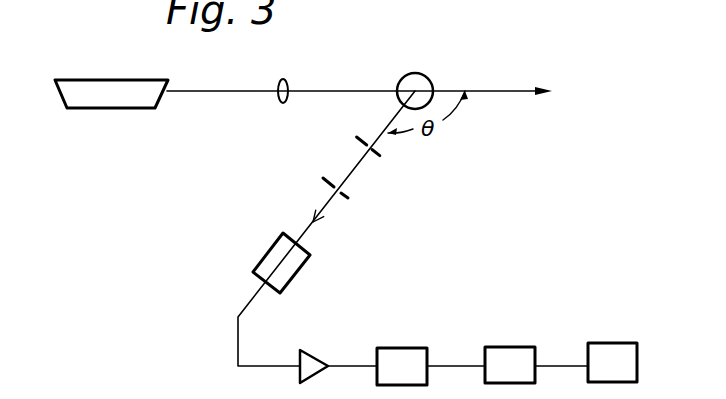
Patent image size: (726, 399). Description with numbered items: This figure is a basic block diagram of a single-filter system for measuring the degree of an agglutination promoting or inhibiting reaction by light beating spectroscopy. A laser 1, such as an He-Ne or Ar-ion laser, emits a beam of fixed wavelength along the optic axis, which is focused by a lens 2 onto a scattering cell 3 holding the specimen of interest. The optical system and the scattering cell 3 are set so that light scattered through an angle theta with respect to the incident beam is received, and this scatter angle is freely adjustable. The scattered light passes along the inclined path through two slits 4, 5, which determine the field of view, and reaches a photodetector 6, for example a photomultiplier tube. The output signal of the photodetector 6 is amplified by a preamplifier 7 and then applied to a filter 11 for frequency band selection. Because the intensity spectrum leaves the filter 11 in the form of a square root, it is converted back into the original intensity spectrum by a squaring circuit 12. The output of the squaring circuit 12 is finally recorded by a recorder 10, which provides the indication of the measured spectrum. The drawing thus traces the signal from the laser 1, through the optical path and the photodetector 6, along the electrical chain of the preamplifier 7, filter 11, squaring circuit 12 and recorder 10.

The laser 1 is at (120, 79).
The lens 2 is at (285, 80).
The scattering cell 3 is at (429, 73).
The slit 4 is at (377, 159).
The slit 5 is at (343, 194).
The photodetector 6 is at (260, 262).
The preamplifier 7 is at (312, 353).
The recorder 10 is at (611, 344).
The filter 11 is at (410, 348).
The squaring circuit 12 is at (511, 347).